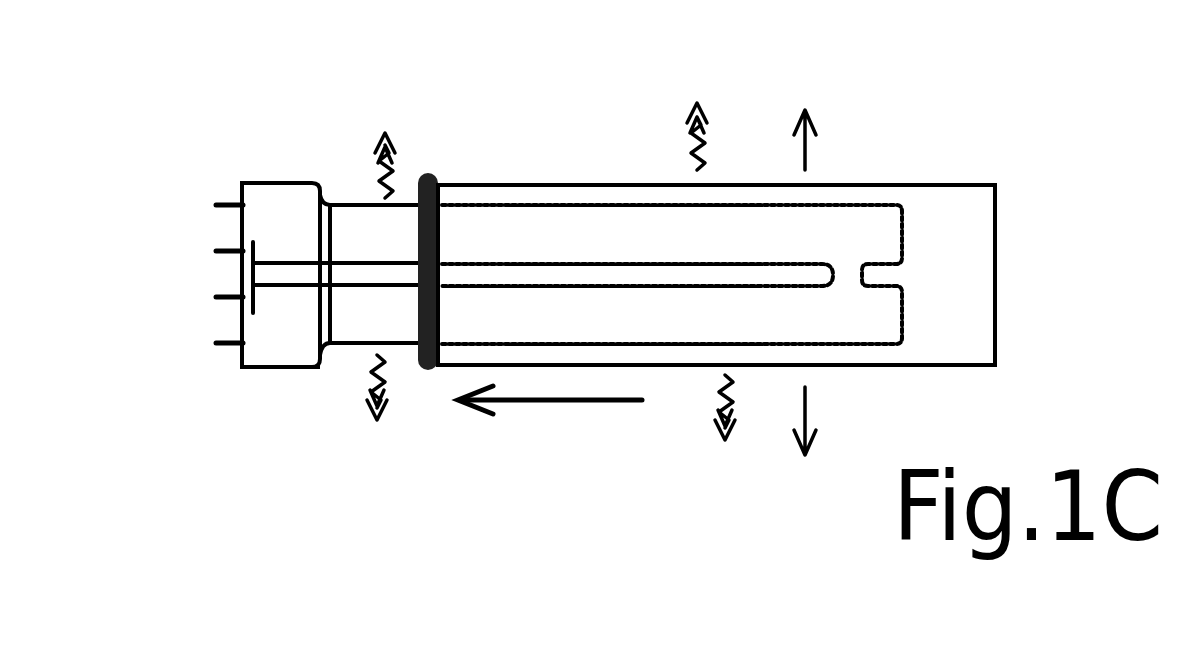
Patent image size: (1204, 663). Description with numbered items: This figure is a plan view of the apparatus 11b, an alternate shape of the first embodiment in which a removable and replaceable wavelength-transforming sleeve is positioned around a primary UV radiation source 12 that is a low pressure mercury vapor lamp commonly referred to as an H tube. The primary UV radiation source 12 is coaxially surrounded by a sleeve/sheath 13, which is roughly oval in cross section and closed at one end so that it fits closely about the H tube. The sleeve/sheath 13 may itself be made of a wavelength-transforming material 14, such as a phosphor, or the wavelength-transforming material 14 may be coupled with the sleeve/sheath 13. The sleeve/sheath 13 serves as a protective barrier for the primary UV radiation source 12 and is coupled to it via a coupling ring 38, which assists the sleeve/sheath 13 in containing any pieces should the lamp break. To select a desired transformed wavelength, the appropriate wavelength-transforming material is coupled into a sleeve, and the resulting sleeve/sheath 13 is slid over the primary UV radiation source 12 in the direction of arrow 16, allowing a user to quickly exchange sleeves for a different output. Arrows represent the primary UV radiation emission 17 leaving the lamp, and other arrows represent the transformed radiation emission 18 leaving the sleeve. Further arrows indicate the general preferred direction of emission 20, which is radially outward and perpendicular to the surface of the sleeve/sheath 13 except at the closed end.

The apparatus 11b is at (270, 377).
The primary UV radiation source 12 is at (345, 197).
The coupling ring 38 is at (445, 170).
The sleeve/sheath 13 is at (1000, 247).
The wavelength-transforming material 14 is at (672, 274).
The arrow 16 is at (550, 420).
The primary UV radiation emission 17 is at (382, 277).
The transformed radiation emission 18 is at (711, 277).
The general preferred direction of emission 20 is at (806, 288).